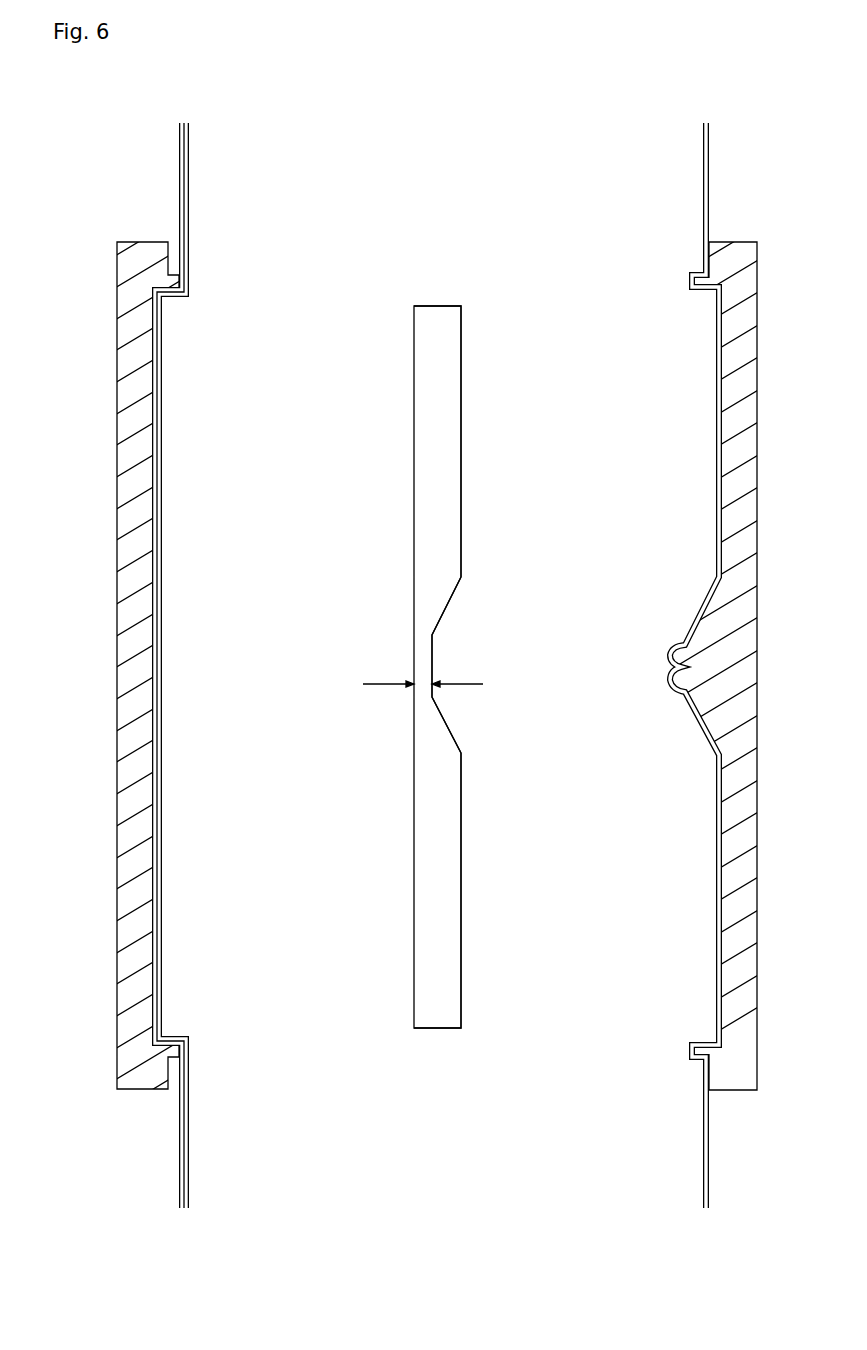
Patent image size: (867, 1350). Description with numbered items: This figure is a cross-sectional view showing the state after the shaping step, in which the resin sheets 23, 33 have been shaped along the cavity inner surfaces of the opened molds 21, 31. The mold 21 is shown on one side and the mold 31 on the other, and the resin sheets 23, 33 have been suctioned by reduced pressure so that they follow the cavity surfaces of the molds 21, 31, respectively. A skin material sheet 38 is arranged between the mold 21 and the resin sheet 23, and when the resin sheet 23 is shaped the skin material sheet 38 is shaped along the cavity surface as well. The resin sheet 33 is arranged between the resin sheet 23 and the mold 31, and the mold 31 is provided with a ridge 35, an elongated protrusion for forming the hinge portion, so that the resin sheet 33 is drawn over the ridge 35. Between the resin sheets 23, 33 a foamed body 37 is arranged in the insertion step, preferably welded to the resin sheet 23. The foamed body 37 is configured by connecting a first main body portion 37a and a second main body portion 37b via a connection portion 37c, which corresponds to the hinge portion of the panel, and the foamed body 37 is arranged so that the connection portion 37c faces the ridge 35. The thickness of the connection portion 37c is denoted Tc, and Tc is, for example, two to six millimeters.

The mold 21 is at (143, 1090).
The resin sheet 23 is at (183, 655).
The skin material sheet 38 is at (178, 196).
The mold 31 is at (745, 1092).
The resin sheet 33 is at (720, 655).
The ridge 35 is at (733, 674).
The foamed body 37 is at (426, 280).
The first main body portion 37a is at (442, 417).
The second main body portion 37b is at (450, 885).
The connection portion 37c is at (427, 662).
The thickness of the connection portion Tc is at (423, 669).